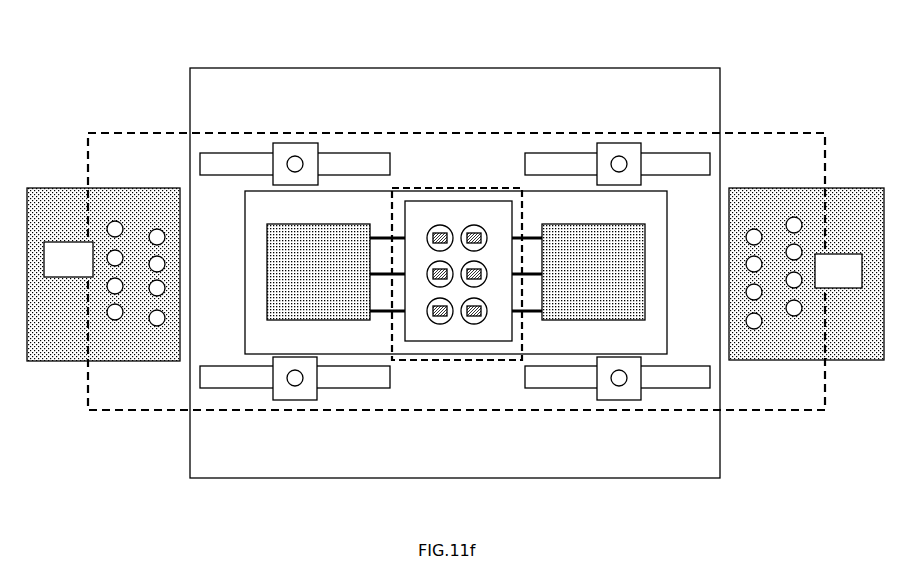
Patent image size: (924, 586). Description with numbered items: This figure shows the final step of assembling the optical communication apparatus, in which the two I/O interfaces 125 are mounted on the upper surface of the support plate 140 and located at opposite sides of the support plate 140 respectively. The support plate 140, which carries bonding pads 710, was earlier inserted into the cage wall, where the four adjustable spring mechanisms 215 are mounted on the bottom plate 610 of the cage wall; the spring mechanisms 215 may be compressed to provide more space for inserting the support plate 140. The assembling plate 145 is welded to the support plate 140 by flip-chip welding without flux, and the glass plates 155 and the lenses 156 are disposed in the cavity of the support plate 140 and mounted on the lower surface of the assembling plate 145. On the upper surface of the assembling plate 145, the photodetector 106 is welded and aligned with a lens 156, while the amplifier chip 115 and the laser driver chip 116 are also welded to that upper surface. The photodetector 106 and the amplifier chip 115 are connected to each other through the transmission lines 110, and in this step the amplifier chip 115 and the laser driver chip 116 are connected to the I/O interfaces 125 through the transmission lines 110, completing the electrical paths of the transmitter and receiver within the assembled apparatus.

The bottom plate 610 is at (455, 273).
The support plate 140 is at (456, 128).
The I/O interfaces 125 is at (455, 274).
The bonding pads 710 is at (752, 226).
The adjustable spring mechanisms 215 is at (337, 162).
The assembling plate 145 is at (239, 268).
The laser driver chip 116 is at (293, 322).
The amplifier chip 115 is at (640, 322).
The transmission lines 110 is at (417, 318).
The glass plates 155 is at (456, 333).
The lenses 156 is at (478, 222).
The photodetector 106 is at (476, 316).